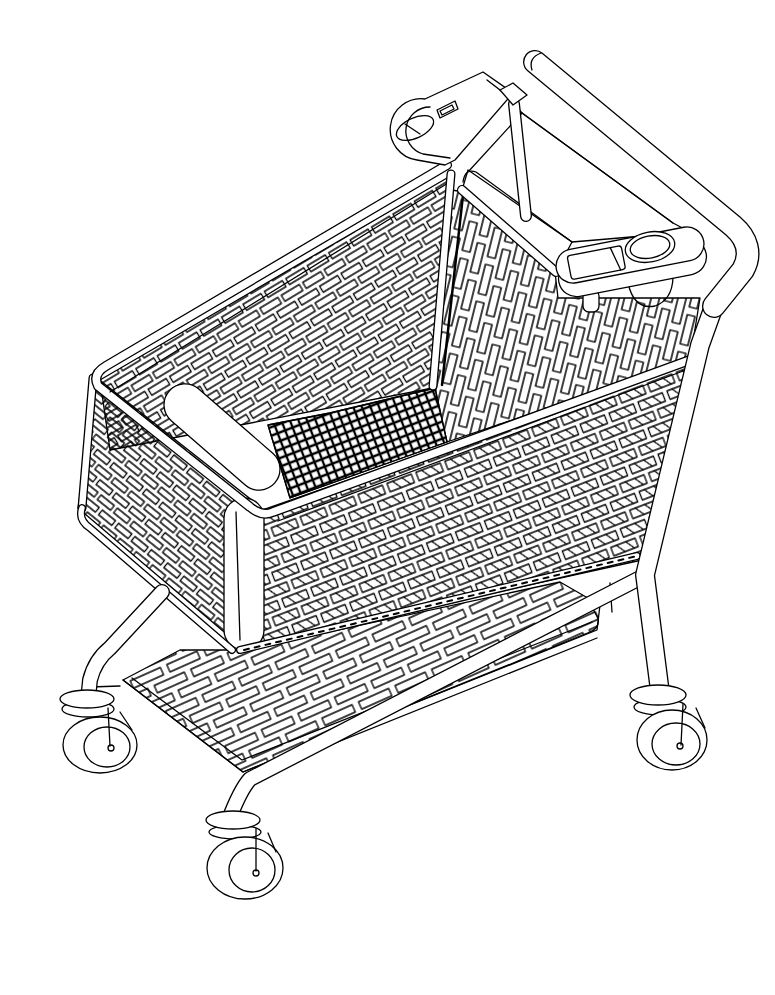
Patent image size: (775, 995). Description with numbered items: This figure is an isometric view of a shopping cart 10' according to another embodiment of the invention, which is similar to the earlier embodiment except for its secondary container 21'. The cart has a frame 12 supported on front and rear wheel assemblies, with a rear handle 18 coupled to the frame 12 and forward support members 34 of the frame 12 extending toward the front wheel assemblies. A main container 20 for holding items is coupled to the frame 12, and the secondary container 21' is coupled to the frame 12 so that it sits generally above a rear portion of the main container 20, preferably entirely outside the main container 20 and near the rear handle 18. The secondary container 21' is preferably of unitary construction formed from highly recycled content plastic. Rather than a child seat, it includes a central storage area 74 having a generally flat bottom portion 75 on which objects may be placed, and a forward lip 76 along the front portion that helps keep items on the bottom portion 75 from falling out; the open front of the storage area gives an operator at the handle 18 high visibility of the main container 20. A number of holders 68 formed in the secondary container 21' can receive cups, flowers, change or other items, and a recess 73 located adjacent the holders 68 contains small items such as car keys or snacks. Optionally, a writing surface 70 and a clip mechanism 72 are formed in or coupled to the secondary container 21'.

The shopping cart 10' is at (404, 467).
The frame 12 is at (665, 592).
The rear handle 18 is at (643, 157).
The main container 20 is at (199, 294).
The secondary container 21' is at (507, 210).
The forward support members 34 is at (333, 712).
The holders 68 is at (650, 243).
The writing surface 70 is at (452, 100).
The clip mechanism 72 is at (417, 86).
The recess 73 is at (631, 253).
The central storage area 74 is at (568, 180).
The bottom portion 75 is at (522, 227).
The forward lip 76 is at (479, 203).